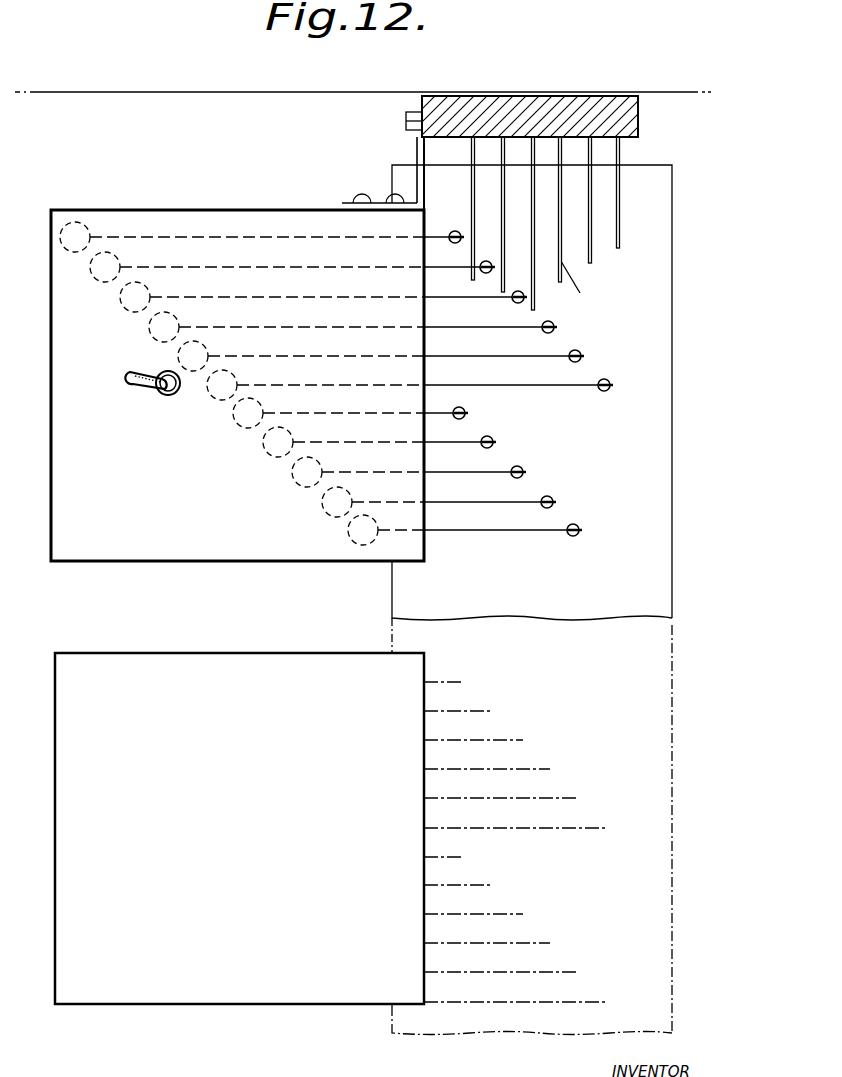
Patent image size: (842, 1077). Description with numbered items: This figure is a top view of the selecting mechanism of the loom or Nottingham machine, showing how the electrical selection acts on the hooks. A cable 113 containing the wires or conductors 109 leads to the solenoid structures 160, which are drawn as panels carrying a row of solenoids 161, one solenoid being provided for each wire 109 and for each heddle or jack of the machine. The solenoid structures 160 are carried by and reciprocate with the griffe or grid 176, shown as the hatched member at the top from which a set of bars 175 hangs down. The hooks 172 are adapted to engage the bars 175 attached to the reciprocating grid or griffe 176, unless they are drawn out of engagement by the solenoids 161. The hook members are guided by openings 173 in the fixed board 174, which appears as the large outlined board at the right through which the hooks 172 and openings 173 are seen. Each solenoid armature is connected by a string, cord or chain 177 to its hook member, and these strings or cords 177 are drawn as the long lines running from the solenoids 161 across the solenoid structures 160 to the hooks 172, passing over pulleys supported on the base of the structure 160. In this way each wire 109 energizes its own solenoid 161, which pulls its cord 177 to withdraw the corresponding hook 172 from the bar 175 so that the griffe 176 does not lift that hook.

The wires or conductors 109 is at (138, 372).
The cable 113 is at (156, 395).
The solenoid structures 160 is at (223, 653).
The solenoids 161 is at (108, 282).
The hooks 172 is at (455, 232).
The openings 173 is at (604, 378).
The fixed board 174 is at (652, 240).
The bars 175 is at (534, 292).
The griffe or grid 176 is at (640, 118).
The strings, cords or chains 177 is at (328, 412).